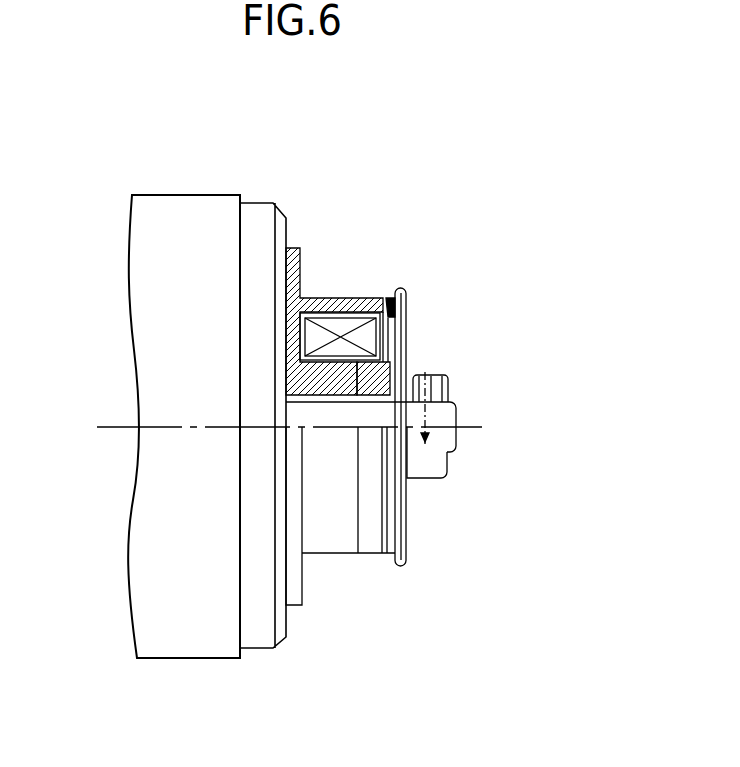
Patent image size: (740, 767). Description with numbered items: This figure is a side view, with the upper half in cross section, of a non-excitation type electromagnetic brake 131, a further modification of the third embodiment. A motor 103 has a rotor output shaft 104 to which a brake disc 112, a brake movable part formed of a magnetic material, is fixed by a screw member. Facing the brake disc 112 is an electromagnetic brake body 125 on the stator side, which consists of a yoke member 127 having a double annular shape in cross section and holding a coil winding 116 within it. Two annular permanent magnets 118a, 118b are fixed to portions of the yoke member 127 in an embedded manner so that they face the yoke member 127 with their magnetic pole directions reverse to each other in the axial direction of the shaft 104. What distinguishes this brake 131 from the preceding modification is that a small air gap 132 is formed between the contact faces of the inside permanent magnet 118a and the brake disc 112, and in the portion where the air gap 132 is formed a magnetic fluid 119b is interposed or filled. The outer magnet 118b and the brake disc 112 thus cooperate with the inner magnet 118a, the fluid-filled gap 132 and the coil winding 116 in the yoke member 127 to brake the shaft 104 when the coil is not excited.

The motor 103 is at (187, 194).
The electromagnetic brake body 125 is at (325, 297).
The non-excitation type electromagnetic brake 131 is at (397, 197).
The coil winding 116 is at (342, 327).
The annular permanent magnet 118b is at (372, 295).
The magnetic fluid 119b is at (405, 302).
The inside permanent magnet 118a is at (410, 343).
The air gap 132 is at (408, 375).
The rotor output shaft 104 is at (448, 414).
The yoke member 127 is at (287, 370).
The brake disc 112 is at (400, 522).